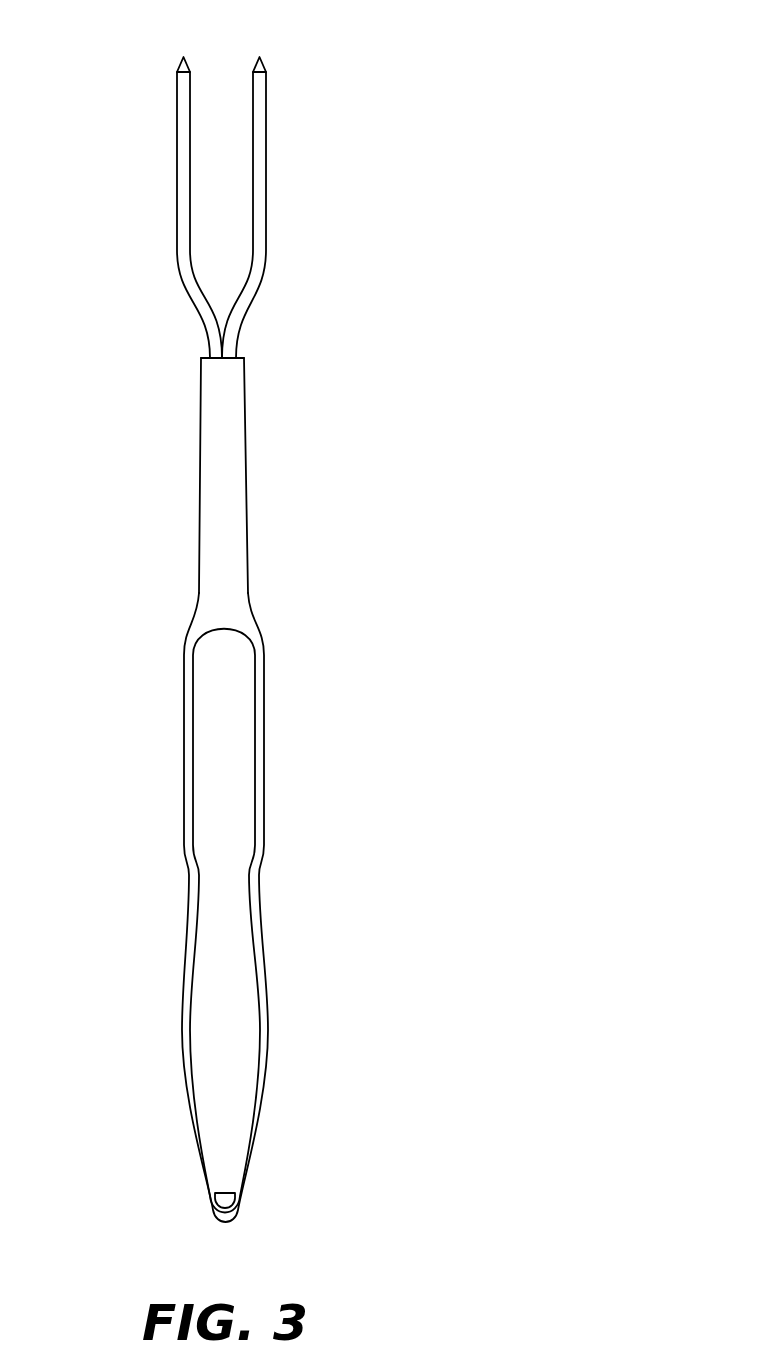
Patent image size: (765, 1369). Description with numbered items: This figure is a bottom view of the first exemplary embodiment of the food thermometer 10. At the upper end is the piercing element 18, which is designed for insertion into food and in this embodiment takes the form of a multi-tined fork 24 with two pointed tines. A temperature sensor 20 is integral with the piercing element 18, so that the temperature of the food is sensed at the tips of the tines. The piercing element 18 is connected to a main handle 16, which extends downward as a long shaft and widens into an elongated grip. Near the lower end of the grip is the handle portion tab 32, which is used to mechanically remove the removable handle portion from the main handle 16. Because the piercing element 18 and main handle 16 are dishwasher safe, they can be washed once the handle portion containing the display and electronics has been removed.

The food thermometer 10 is at (430, 357).
The main handle 16 is at (237, 585).
The piercing element 18 is at (257, 223).
The temperature sensor 20 is at (262, 65).
The multi-tined fork 24 is at (268, 45).
The handle portion tab 32 is at (228, 1200).